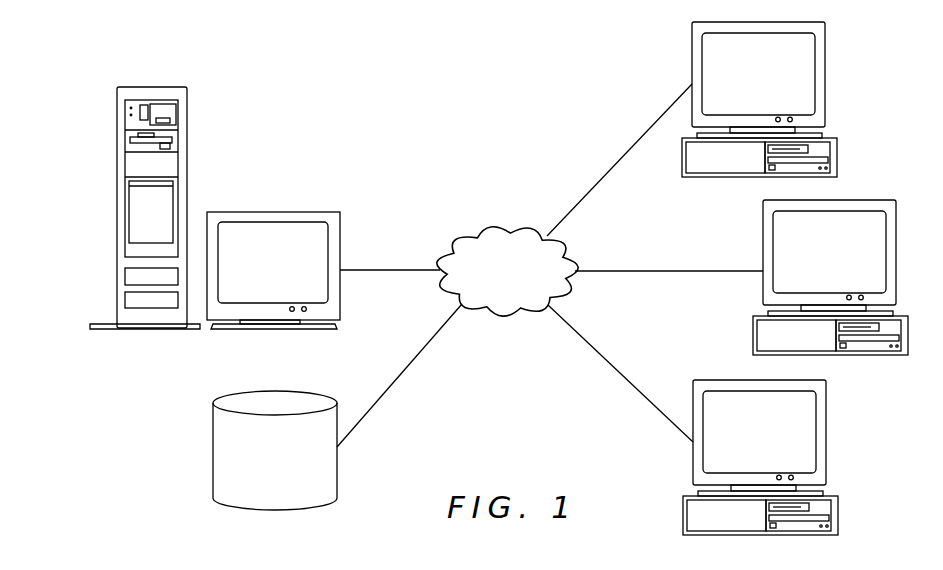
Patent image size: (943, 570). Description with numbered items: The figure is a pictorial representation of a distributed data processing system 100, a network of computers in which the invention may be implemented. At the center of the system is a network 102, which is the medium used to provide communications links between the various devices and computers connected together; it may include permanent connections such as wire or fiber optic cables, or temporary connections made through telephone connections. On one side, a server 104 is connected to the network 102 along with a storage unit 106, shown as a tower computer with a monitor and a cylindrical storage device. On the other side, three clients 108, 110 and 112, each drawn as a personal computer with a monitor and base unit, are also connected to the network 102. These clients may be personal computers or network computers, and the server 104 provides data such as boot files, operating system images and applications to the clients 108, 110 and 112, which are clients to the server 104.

The distributed data processing system 100 is at (299, 64).
The network 102 is at (487, 300).
The server 104 is at (256, 274).
The storage unit 106 is at (256, 473).
The client 108 is at (740, 93).
The client 110 is at (811, 271).
The client 112 is at (741, 451).